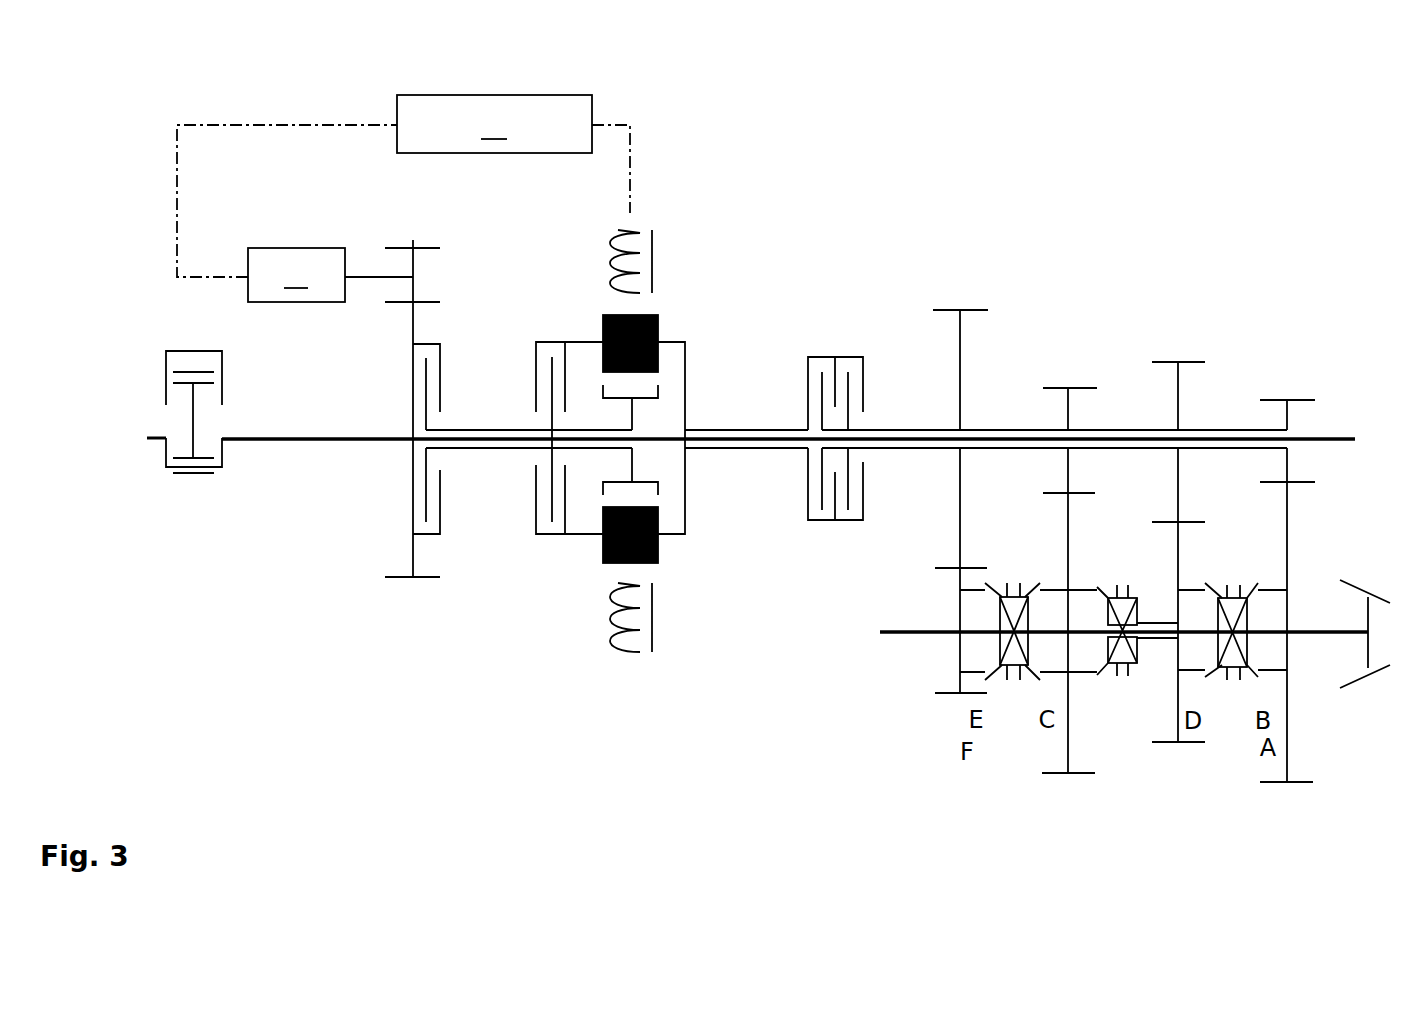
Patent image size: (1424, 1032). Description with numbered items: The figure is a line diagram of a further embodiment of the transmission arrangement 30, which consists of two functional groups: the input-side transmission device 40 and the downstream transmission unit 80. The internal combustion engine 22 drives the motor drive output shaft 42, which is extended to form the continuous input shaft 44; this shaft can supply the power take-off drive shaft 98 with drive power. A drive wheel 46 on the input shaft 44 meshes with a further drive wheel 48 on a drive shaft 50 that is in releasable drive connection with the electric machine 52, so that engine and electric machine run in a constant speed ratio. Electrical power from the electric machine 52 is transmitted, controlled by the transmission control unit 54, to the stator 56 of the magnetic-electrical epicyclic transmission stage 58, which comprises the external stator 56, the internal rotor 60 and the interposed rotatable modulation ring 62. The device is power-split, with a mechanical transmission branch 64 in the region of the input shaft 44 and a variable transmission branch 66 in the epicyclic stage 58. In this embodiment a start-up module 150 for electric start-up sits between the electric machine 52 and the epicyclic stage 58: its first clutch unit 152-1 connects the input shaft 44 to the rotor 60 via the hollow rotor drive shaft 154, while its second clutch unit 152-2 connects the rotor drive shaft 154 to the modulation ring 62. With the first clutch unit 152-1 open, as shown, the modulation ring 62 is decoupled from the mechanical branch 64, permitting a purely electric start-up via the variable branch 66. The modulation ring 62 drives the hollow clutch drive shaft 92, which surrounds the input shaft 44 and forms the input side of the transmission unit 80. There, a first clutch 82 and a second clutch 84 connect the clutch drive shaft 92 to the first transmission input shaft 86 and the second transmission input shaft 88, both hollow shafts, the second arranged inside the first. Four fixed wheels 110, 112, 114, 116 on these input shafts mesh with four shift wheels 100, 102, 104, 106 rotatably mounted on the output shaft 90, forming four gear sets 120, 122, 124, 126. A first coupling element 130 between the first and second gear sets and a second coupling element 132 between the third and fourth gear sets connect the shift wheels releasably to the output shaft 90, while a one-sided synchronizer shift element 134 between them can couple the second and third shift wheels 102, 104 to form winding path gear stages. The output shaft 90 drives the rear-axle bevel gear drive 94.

The internal combustion engine 22 is at (164, 456).
The transmission arrangement 30 is at (893, 149).
The transmission device 40 is at (682, 428).
The motor drive output shaft 42 is at (247, 442).
The input shaft 44 is at (360, 442).
The drive wheel 46 is at (416, 580).
The drive wheel 48 is at (413, 248).
The drive shaft 50 is at (377, 273).
The electric machine 52 is at (296, 275).
The transmission control unit 54 is at (494, 124).
The stator 56 is at (637, 233).
The magnetic-electrical epicyclic transmission stage 58 is at (679, 302).
The rotor 60 is at (603, 486).
The modulation ring 62 is at (660, 331).
The mechanical transmission branch 64 is at (498, 455).
The variable transmission branch 66 is at (633, 167).
The transmission unit 80 is at (1042, 369).
The first clutch 82 is at (857, 525).
The second clutch 84 is at (820, 525).
The first transmission input shaft 86 is at (873, 425).
The second transmission input shaft 88 is at (910, 432).
The output shaft 90 is at (1305, 640).
The clutch drive shaft 92 is at (770, 428).
The rear-axle bevel gear drive 94 is at (1383, 605).
The power take-off drive shaft 98 is at (1336, 436).
The first shift wheel 100 is at (950, 695).
The second shift wheel 102 is at (1055, 775).
The third shift wheel 104 is at (1170, 748).
The fourth shift wheel 106 is at (1280, 785).
The first fixed wheel 110 is at (968, 308).
The second fixed wheel 112 is at (1076, 386).
The third fixed wheel 114 is at (1190, 360).
The fourth fixed wheel 116 is at (1293, 398).
The first gear set 120 is at (960, 280).
The second gear set 122 is at (1068, 280).
The third gear set 124 is at (1175, 280).
The fourth gear set 126 is at (1280, 280).
The first coupling element 130 is at (1010, 560).
The second coupling element 132 is at (1232, 558).
The shift element 134 is at (1122, 560).
The start-up module 150 is at (522, 433).
The first clutch unit 152-1 is at (441, 541).
The second clutch unit 152-2 is at (540, 536).
The rotor drive shaft 154 is at (487, 427).